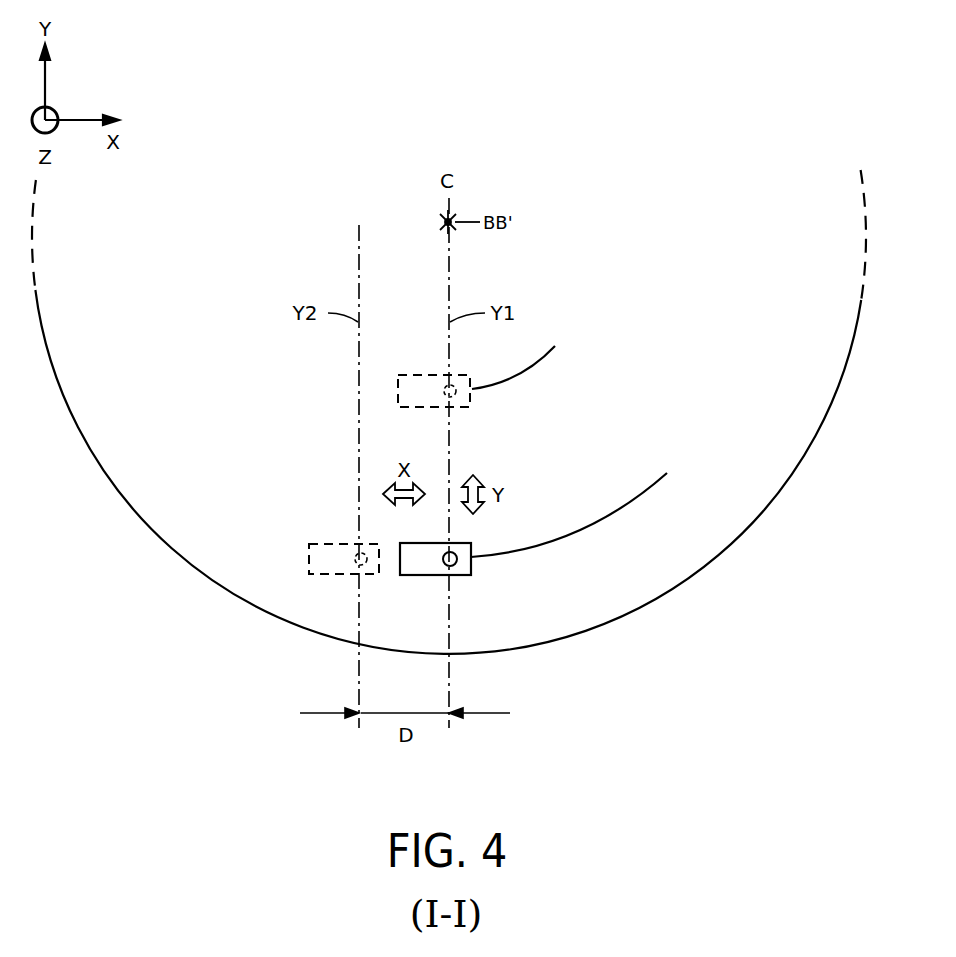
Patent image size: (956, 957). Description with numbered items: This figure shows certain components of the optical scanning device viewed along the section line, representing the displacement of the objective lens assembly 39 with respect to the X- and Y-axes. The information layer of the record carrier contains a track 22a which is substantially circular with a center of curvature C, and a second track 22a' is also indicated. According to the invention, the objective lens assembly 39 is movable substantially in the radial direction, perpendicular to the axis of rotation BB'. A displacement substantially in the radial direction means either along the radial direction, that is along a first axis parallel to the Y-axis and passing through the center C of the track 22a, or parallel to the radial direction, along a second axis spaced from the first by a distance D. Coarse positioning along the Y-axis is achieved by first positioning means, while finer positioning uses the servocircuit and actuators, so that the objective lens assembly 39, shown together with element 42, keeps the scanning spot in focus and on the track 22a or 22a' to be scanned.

The track 22a is at (569, 496).
The track 22a' is at (482, 381).
The objective lens assembly 39 is at (410, 577).
The pin 42 is at (457, 565).